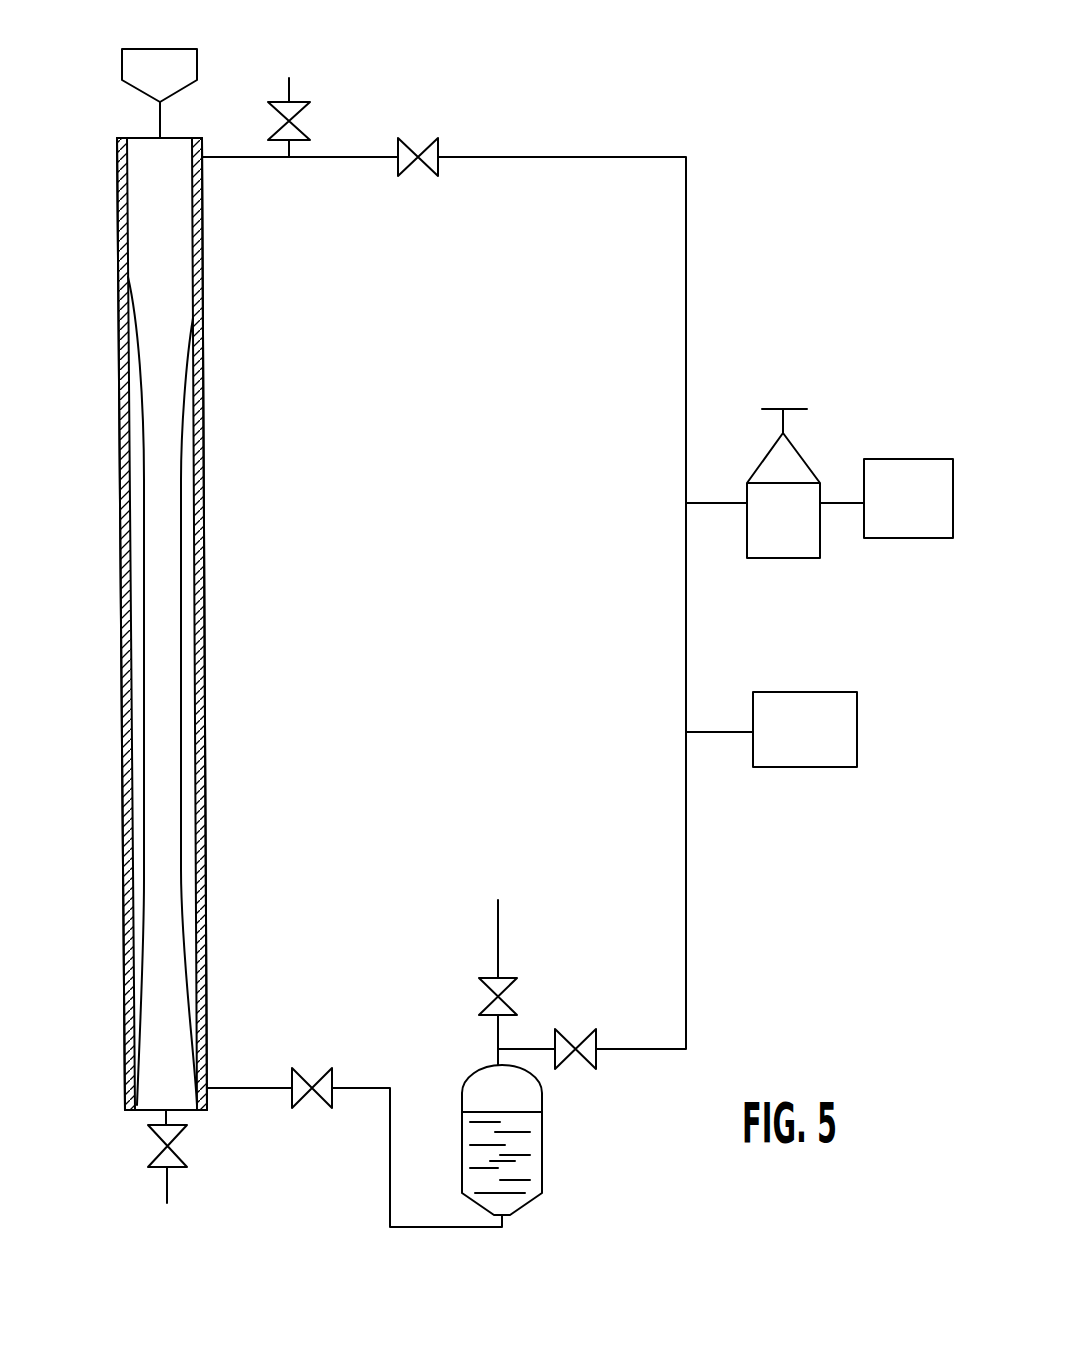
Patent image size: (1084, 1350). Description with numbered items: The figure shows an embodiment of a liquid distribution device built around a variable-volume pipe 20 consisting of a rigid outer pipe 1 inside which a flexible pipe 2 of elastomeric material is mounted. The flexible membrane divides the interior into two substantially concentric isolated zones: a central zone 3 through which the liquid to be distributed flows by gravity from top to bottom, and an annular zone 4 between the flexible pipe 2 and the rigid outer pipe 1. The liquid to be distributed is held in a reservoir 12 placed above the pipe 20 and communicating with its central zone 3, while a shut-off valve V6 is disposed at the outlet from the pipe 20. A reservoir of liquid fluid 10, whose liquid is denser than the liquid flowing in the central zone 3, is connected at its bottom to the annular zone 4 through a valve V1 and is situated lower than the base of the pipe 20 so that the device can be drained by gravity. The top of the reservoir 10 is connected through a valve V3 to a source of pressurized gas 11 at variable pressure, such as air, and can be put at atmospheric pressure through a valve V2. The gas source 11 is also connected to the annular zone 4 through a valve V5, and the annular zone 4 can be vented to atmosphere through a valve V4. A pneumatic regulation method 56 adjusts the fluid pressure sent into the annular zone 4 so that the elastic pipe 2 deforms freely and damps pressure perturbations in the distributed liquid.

The rigid outer pipe 1 is at (218, 508).
The flexible pipe 2 is at (186, 590).
The central zone 3 is at (162, 425).
The annular zone 4 is at (137, 600).
The reservoir of liquid fluid 10 is at (548, 1187).
The source of pressurized gas 11 is at (898, 455).
The reservoir 12 is at (182, 40).
The pipe 20 is at (116, 376).
The pneumatic regulation method 56 is at (813, 692).
The valve V1 is at (312, 1069).
The valve V2 is at (479, 982).
The valve V3 is at (575, 1032).
The valve V4 is at (303, 117).
The valve V5 is at (419, 138).
The shut-off valve V6 is at (182, 1156).